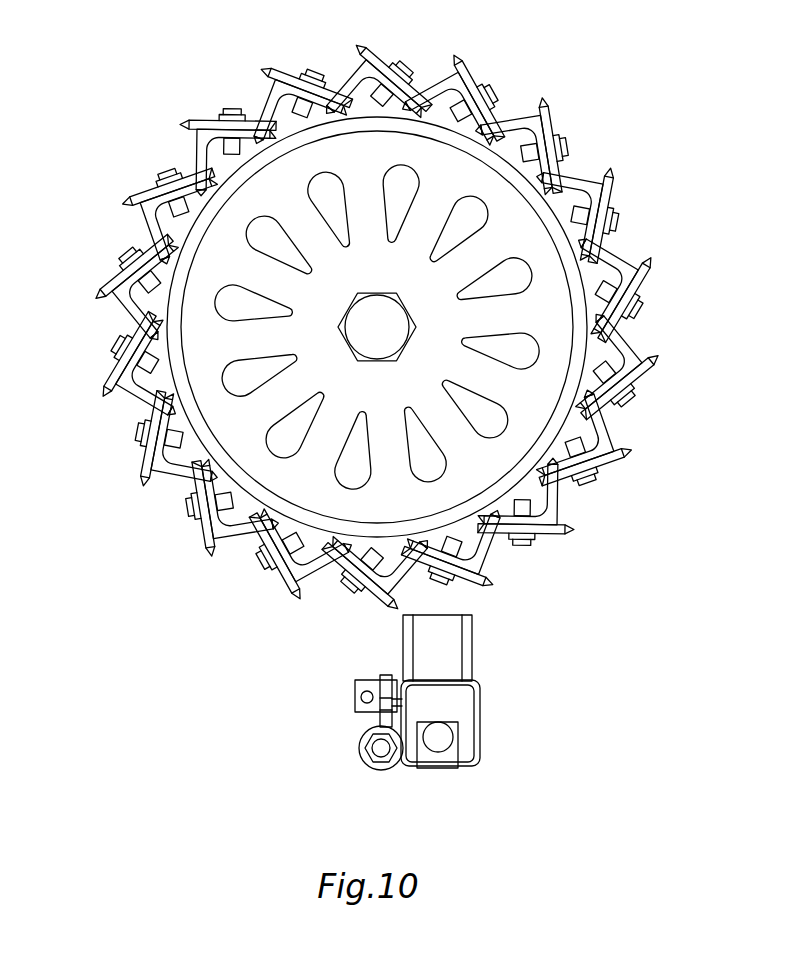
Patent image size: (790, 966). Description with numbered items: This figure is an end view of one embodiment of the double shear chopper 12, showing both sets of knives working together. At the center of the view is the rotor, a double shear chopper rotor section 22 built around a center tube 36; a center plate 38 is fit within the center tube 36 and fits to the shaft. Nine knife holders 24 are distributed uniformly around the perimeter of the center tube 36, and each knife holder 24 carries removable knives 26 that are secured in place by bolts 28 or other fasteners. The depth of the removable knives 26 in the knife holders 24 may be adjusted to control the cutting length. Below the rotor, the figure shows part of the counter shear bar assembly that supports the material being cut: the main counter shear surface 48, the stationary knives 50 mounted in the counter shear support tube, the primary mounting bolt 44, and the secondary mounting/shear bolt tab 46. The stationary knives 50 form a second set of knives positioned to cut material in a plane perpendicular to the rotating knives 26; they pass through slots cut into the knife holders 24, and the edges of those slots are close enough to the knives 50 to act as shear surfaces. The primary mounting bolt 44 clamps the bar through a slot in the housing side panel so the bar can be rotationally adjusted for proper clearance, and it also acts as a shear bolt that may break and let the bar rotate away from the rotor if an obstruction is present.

The double shear chopper 12 is at (140, 44).
The double shear chopper rotor section 22 is at (580, 95).
The knife holder 24 is at (252, 104).
The removable knife 26 is at (263, 67).
The bolt 28 is at (213, 117).
The center tube 36 is at (567, 396).
The center plate 38 is at (305, 339).
The primary mounting bolt 44 is at (372, 746).
The secondary mounting/shear bolt tab 46 is at (360, 686).
The main counter shear surface 48 is at (383, 676).
The stationary knife 50 is at (455, 636).